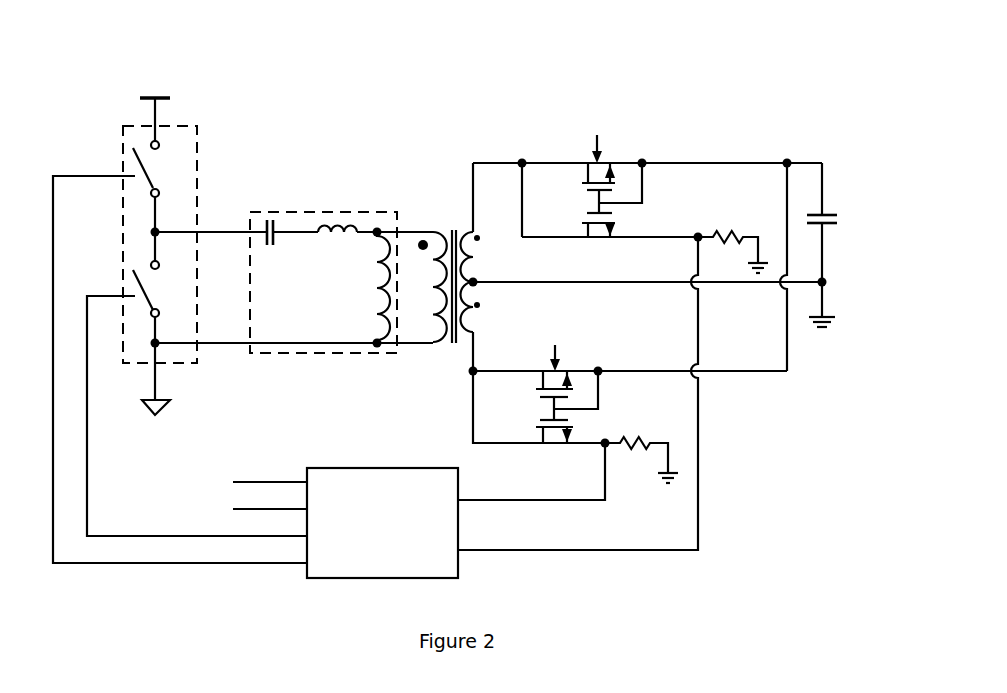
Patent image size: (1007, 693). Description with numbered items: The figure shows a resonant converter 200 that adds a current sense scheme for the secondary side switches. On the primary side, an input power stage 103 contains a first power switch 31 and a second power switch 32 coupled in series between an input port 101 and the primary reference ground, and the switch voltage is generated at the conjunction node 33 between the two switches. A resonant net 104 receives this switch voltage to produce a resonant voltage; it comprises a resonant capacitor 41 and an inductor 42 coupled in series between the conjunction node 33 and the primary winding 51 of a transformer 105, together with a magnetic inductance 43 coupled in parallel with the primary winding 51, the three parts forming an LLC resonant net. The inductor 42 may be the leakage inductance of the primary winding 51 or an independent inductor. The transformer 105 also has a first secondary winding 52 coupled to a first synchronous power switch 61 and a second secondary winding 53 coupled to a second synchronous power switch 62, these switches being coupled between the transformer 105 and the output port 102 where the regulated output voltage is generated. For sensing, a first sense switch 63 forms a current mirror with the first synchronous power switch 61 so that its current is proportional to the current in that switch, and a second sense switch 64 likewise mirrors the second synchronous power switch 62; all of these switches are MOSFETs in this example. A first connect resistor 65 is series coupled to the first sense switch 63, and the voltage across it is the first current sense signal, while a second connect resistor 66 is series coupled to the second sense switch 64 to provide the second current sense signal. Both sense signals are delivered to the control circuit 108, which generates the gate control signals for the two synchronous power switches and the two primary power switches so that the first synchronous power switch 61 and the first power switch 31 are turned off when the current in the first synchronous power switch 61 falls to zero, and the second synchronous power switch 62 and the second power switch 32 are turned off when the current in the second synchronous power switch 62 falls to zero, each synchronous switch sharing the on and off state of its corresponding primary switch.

The resonant converter 200 is at (792, 97).
The input port 101 is at (155, 105).
The input power stage 103 is at (203, 155).
The first power switch 31 is at (159, 186).
The second power switch 32 is at (159, 304).
The conjunction node 33 is at (162, 238).
The resonant net 104 is at (328, 207).
The resonant capacitor 41 is at (272, 244).
The inductor 42 is at (337, 243).
The magnetic inductance 43 is at (369, 288).
The transformer 105 is at (453, 227).
The primary winding 51 is at (426, 287).
The first secondary winding 52 is at (484, 222).
The second secondary winding 53 is at (484, 326).
The first synchronous power switch 61 is at (596, 188).
The first sense switch 63 is at (598, 238).
The second synchronous power switch 62 is at (553, 395).
The second sense switch 64 is at (554, 447).
The first connect resistor 65 is at (731, 241).
The second connect resistor 66 is at (640, 451).
The output port 102 is at (822, 233).
The control circuit 108 is at (345, 523).